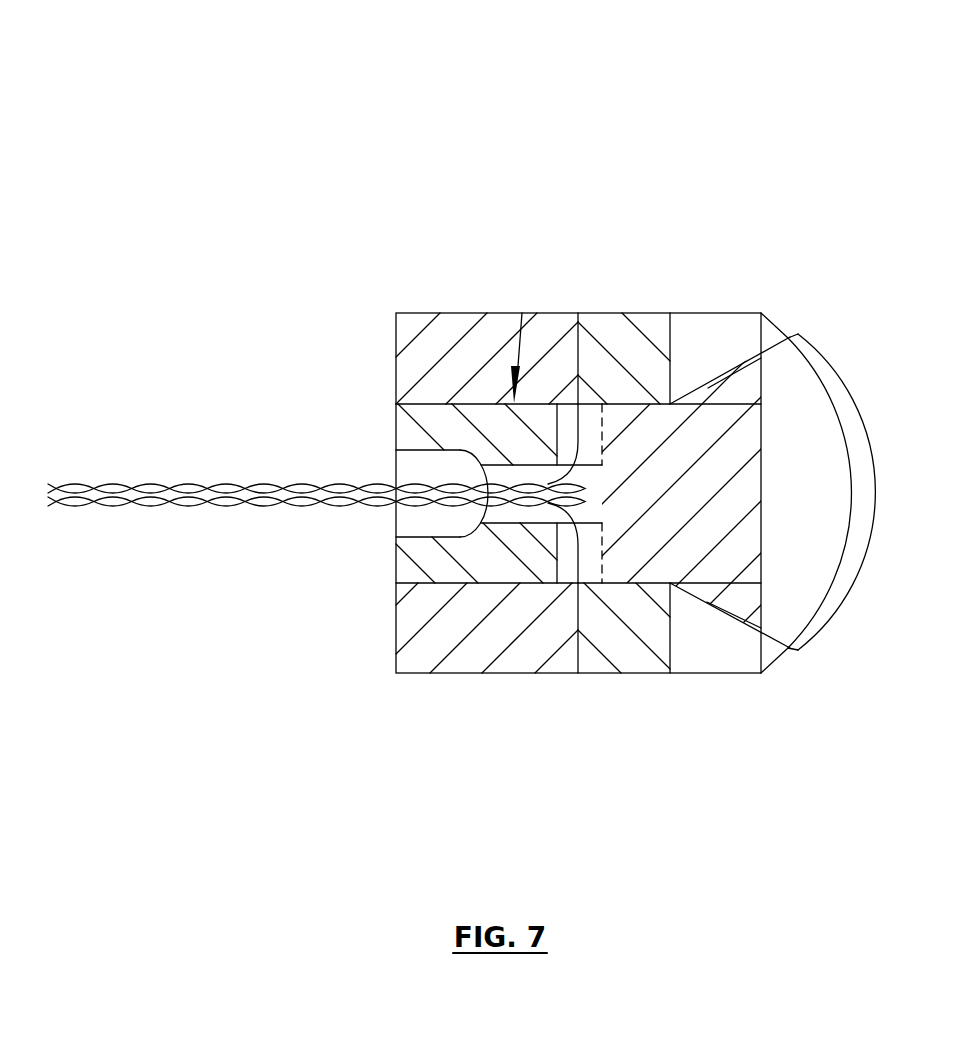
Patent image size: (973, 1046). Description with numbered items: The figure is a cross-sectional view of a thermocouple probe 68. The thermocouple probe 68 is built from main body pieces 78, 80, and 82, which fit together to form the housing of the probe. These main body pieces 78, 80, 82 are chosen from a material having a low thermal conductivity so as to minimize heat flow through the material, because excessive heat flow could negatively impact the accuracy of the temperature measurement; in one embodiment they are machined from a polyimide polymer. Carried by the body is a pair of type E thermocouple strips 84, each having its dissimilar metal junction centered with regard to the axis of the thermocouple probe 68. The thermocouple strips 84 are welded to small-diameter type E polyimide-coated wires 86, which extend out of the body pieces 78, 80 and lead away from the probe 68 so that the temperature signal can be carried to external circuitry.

The thermocouple probe 68 is at (820, 118).
The main body piece 78 is at (418, 358).
The main body piece 80 is at (423, 563).
The main body piece 82 is at (653, 327).
The type E thermocouple strip 84 is at (884, 448).
The type E polyimide coated wire 86 is at (192, 463).